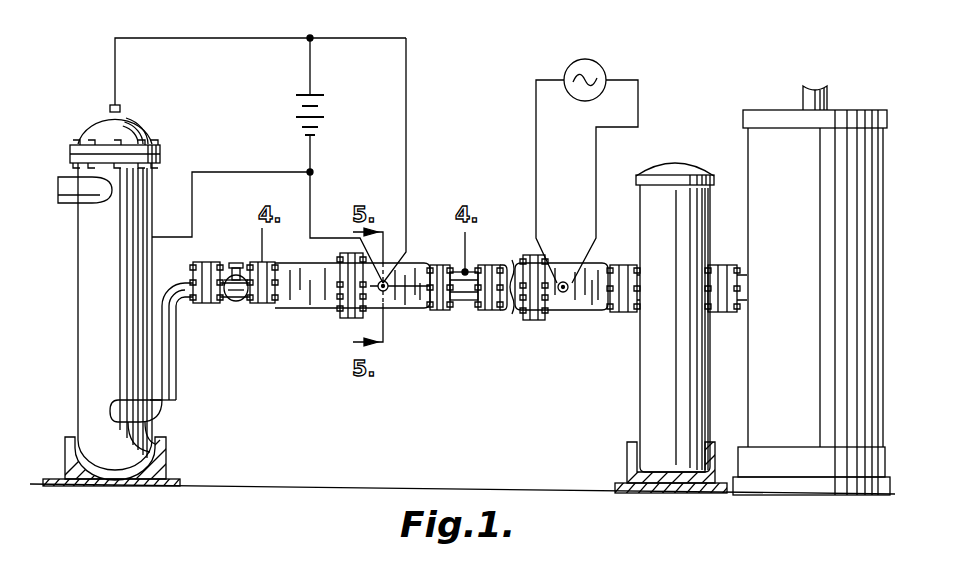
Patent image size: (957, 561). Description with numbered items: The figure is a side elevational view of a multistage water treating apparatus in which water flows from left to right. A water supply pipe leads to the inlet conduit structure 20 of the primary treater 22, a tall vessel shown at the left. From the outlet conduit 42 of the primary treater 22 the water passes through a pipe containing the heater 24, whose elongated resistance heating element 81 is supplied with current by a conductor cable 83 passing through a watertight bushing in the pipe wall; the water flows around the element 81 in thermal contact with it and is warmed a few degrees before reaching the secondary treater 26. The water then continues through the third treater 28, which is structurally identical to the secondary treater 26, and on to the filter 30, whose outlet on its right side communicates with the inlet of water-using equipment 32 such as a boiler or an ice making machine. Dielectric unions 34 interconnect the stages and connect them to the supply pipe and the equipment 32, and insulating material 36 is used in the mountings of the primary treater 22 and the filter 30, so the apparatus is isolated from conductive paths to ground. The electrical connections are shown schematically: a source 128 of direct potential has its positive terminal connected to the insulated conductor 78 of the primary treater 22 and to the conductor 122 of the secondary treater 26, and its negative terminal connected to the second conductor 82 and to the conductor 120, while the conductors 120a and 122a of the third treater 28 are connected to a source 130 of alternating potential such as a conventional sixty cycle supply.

The inlet conduit structure 20 is at (68, 205).
The primary treater 22 is at (115, 64).
The heater 24 is at (226, 304).
The secondary treater 26 is at (300, 310).
The third treater 28 is at (505, 313).
The filter 30 is at (678, 160).
The water-using equipment 32 is at (845, 110).
The dielectric unions 34 is at (195, 265).
The insulating material 36 is at (165, 462).
The outlet conduit 42 is at (165, 426).
The insulated conductor 78 is at (260, 70).
The resistance heating element 81 is at (237, 301).
The second conductor 82 is at (210, 172).
The conductor cable 83 is at (236, 263).
The insulated electrical conductor 120 is at (320, 237).
The conductor 120a is at (560, 300).
The insulated electrical conductor 122 is at (406, 135).
The conductor 122a is at (580, 236).
The source of direct potential 128 is at (298, 105).
The source of alternating potential 130 is at (590, 60).